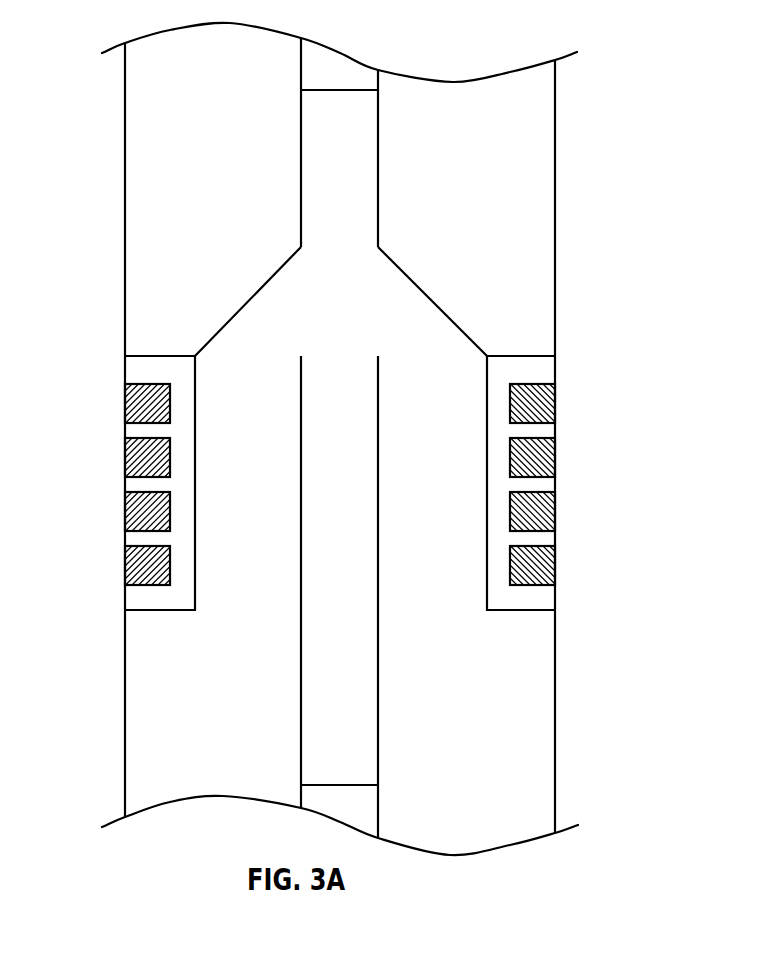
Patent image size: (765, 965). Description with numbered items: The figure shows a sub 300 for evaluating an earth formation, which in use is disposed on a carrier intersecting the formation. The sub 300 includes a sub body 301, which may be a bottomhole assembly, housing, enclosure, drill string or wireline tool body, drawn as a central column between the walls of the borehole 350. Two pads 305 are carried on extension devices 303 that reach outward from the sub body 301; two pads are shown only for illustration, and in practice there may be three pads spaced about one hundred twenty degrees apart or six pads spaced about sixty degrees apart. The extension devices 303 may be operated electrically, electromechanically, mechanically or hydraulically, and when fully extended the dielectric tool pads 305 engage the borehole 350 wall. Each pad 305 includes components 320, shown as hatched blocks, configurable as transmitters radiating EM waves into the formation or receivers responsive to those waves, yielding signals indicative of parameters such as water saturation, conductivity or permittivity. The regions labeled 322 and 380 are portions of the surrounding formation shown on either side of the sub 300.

The sub 300 is at (301, 88).
The sub body 301 is at (378, 170).
The extension devices 303 is at (259, 290).
The pads 305 is at (122, 372).
The components 320 is at (125, 560).
The tool body section 322 is at (240, 784).
The borehole 350 is at (556, 245).
The tool body region 380 is at (630, 737).